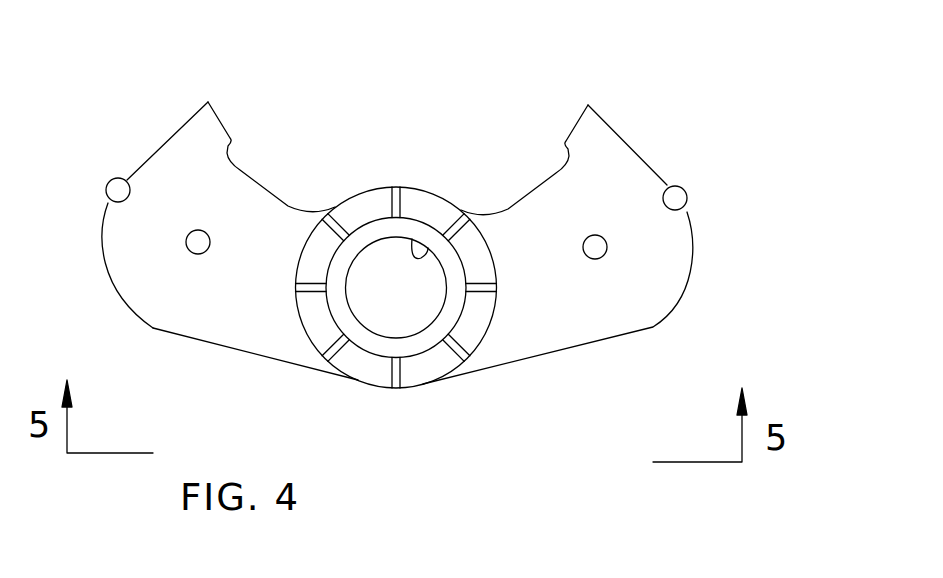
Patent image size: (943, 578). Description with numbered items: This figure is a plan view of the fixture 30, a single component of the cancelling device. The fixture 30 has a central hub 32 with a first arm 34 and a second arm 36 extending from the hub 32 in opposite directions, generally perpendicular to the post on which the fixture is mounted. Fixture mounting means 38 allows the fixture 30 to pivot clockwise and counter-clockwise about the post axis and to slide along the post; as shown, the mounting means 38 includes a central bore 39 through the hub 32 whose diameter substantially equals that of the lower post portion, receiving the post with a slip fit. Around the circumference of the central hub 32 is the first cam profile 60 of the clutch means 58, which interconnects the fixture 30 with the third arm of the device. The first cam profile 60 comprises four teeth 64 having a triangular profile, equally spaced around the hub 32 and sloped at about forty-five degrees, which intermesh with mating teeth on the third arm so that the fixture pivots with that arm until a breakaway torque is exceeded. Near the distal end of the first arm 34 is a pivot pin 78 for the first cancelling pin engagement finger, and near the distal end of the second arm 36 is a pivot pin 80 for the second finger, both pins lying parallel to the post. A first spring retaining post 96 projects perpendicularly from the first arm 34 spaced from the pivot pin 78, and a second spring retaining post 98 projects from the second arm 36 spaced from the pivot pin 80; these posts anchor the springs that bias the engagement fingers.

The fixture 30 is at (470, 124).
The central hub 32 is at (360, 382).
The first arm 34 is at (250, 325).
The second arm 36 is at (620, 320).
The fixture mounting means 38 is at (370, 203).
The central bore 39 is at (423, 256).
The clutch means 58 is at (434, 153).
The first cam profile 60 is at (435, 390).
The teeth 64 is at (410, 187).
The pivot pin 78 is at (186, 243).
The pivot pin 80 is at (603, 253).
The first spring retaining post 96 is at (106, 189).
The second spring retaining post 98 is at (682, 198).